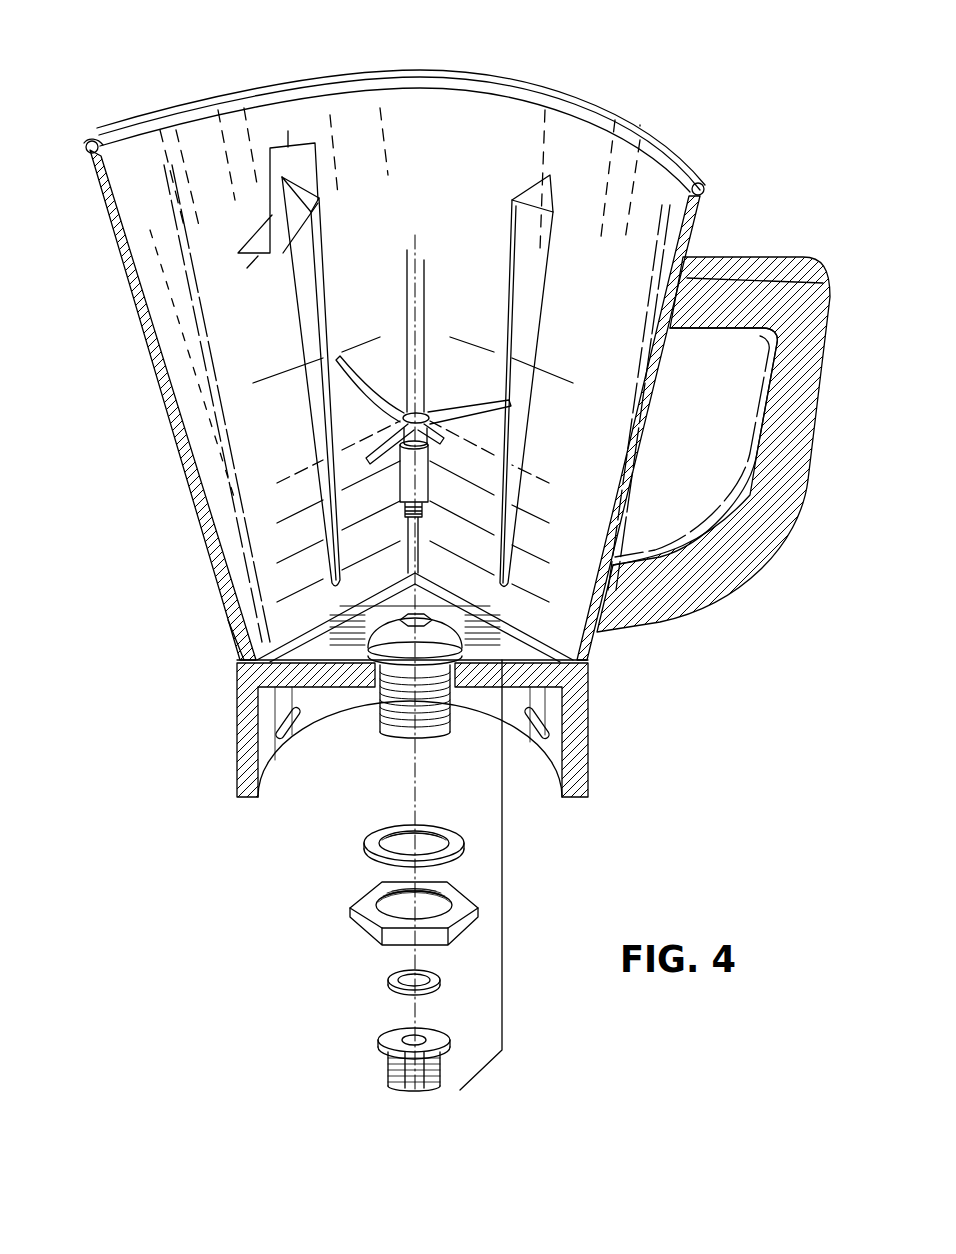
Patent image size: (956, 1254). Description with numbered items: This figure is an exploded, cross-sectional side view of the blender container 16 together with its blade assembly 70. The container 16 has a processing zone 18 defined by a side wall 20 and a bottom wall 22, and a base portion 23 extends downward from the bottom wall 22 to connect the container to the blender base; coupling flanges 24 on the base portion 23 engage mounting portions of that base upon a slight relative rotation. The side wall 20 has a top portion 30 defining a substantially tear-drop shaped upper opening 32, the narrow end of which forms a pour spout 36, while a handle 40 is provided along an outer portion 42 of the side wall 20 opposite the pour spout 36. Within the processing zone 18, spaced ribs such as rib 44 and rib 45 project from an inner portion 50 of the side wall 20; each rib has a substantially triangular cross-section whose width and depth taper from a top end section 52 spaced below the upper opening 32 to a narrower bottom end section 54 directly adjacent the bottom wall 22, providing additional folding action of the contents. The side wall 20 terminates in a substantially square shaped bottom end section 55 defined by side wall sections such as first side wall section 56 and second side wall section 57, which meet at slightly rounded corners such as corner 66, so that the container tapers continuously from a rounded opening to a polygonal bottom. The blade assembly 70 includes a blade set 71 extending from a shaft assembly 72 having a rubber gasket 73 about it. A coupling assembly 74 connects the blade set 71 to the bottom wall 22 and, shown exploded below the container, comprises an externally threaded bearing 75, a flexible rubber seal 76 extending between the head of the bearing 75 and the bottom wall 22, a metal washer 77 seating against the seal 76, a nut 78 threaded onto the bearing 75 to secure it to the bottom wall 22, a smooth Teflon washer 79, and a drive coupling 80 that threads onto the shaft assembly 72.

The blender container 16 is at (758, 95).
The processing zone 18 is at (459, 569).
The side wall 20 is at (172, 432).
The bottom wall 22 is at (334, 661).
The base portion 23 is at (592, 745).
The coupling flanges 24 is at (292, 722).
The top portion 30 is at (712, 180).
The upper opening 32 is at (632, 140).
The pour spout 36 is at (86, 143).
The handle 40 is at (800, 505).
The outer portion 42 is at (650, 405).
The spaced rib 44 is at (332, 290).
The spaced rib 45 is at (503, 325).
The inner portion 50 is at (434, 148).
The top end section 52 is at (548, 195).
The bottom end section 54 is at (514, 455).
The bottom end section 55 is at (268, 628).
The first side wall section 56 is at (296, 593).
The second side wall section 57 is at (469, 548).
The corner 66 is at (418, 548).
The blade assembly 70 is at (423, 397).
The blade set 71 is at (390, 458).
The shaft assembly 72 is at (420, 485).
The rubber gasket 73 is at (428, 448).
The coupling assembly 74 is at (502, 832).
The externally threaded bearing 75 is at (436, 695).
The flexible rubber seal 76 is at (392, 672).
The metal washer 77 is at (360, 843).
The nut 78 is at (352, 912).
The Teflon washer 79 is at (390, 980).
The drive coupling 80 is at (380, 1046).